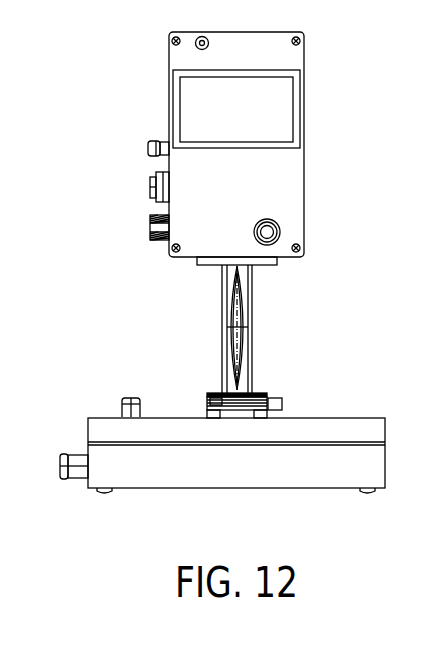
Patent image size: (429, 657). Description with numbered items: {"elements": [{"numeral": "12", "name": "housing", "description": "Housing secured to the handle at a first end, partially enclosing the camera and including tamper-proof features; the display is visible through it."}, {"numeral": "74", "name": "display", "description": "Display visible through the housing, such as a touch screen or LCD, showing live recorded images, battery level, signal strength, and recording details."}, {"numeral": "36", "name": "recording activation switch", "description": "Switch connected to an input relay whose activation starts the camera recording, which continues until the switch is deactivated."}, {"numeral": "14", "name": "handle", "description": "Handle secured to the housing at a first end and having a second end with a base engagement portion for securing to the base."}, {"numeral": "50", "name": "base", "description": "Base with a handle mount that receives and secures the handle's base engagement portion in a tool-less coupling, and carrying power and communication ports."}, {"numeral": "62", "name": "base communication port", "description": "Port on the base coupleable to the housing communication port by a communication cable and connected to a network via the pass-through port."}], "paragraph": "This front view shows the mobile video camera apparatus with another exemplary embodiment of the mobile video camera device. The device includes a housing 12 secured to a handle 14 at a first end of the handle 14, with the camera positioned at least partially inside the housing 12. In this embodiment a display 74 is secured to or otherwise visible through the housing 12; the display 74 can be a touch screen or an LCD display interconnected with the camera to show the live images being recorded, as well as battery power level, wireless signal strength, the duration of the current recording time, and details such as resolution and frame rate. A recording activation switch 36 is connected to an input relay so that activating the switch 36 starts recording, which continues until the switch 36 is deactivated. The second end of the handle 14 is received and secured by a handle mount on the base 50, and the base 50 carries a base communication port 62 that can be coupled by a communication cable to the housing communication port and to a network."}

The housing / controller unit 12 is at (292, 185).
The display screen 74 is at (287, 107).
The button 36 is at (266, 218).
The column / support post 14 is at (253, 308).
The base 50 is at (88, 433).
The button on base 62 is at (128, 397).